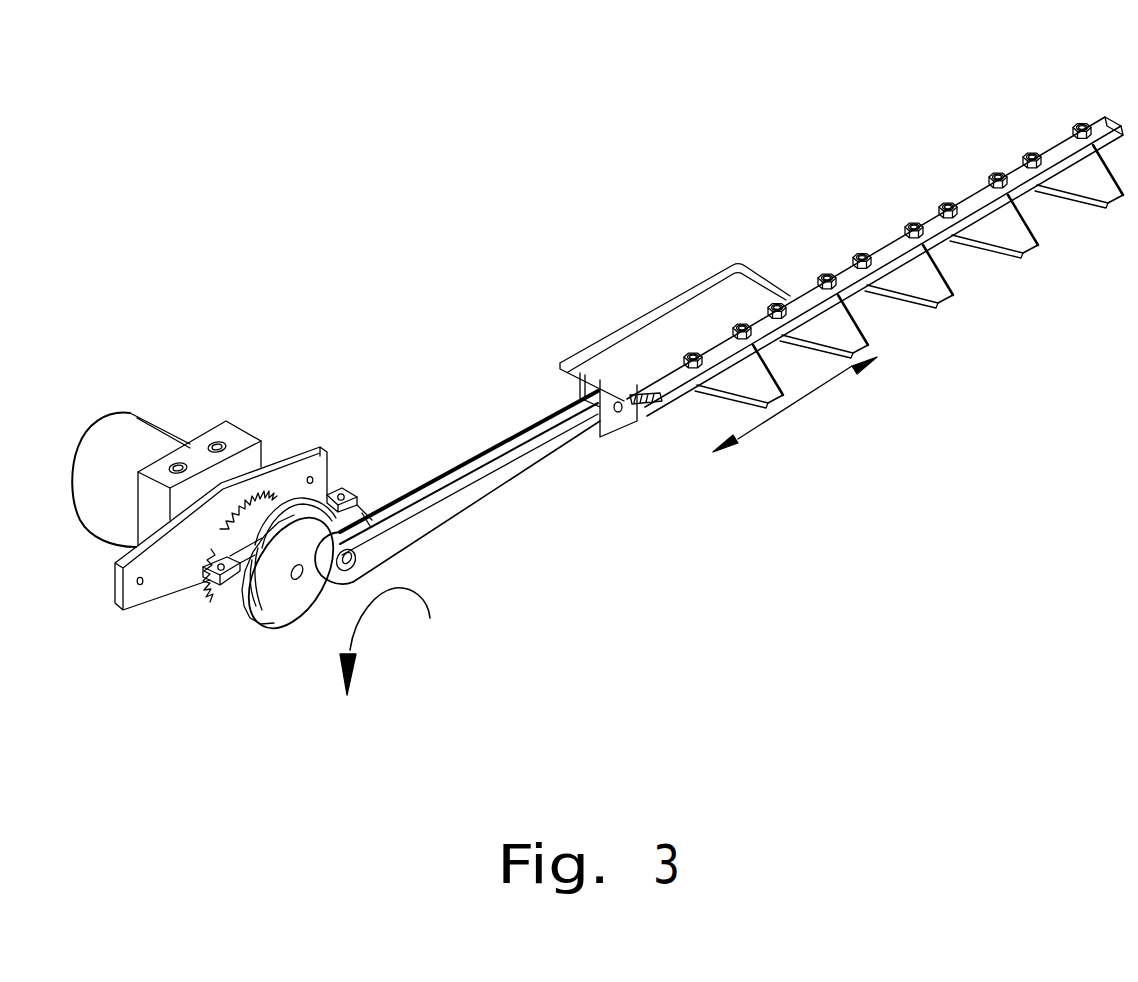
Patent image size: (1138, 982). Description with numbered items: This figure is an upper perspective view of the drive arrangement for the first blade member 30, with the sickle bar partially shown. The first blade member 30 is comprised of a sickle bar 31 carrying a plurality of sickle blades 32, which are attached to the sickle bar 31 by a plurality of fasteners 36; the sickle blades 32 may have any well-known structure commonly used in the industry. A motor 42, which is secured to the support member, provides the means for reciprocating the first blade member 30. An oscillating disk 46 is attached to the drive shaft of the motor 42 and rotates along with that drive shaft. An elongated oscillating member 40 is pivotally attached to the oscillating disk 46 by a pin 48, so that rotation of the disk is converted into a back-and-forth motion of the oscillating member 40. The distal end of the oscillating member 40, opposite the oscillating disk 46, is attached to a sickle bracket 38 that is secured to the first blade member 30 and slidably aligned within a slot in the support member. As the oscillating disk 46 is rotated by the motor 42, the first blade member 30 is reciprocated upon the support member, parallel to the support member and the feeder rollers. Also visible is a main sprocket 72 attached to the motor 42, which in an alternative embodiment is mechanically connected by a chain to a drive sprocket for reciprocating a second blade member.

The first blade member 30 is at (1098, 86).
The sickle bar 31 is at (883, 226).
The sickle blades 32 is at (1079, 185).
The fasteners 36 is at (1022, 152).
The sickle bracket 38 is at (731, 298).
The oscillating member 40 is at (452, 508).
The motor 42 is at (238, 440).
The oscillating disk 46 is at (293, 604).
The pin 48 is at (354, 563).
The main sprocket 72 is at (327, 476).